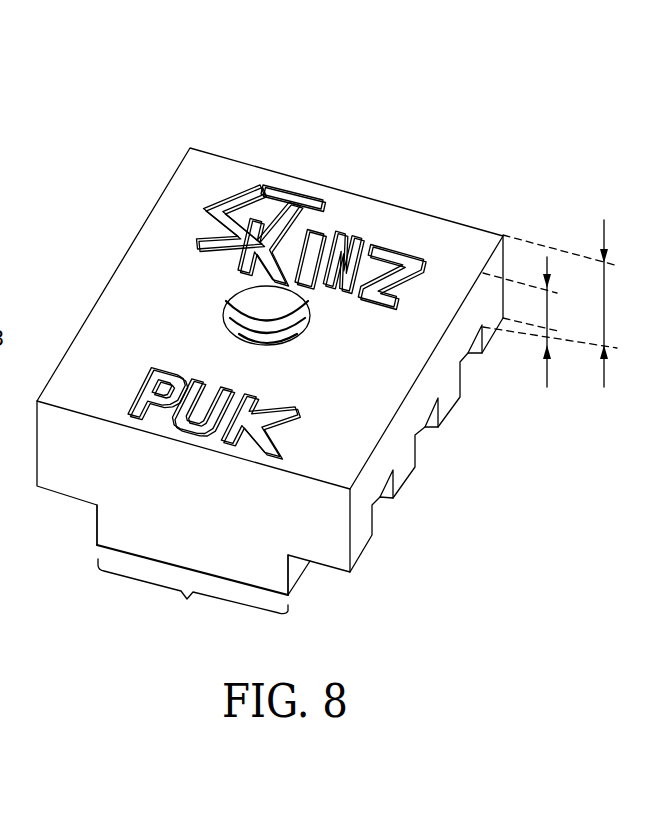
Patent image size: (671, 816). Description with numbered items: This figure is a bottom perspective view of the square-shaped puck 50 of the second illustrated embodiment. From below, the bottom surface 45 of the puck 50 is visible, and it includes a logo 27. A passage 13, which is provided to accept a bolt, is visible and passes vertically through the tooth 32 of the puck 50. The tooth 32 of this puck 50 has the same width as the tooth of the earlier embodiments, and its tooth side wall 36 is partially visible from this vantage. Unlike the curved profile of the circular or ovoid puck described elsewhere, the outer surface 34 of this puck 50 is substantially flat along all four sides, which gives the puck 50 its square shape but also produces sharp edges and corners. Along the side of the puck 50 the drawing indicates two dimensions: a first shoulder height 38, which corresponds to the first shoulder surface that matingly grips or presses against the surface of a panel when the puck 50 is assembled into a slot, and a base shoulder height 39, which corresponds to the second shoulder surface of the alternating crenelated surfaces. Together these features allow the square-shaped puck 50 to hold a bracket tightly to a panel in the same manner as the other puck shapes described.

The puck 50 is at (382, 144).
The bottom surface 45 is at (454, 236).
The logo 27 is at (217, 207).
The passage 13 is at (263, 316).
The outer surface 34 is at (453, 387).
The tooth side wall 36 is at (297, 568).
The tooth 32 is at (193, 593).
The first shoulder height 38 is at (605, 300).
The base shoulder height 39 is at (547, 318).